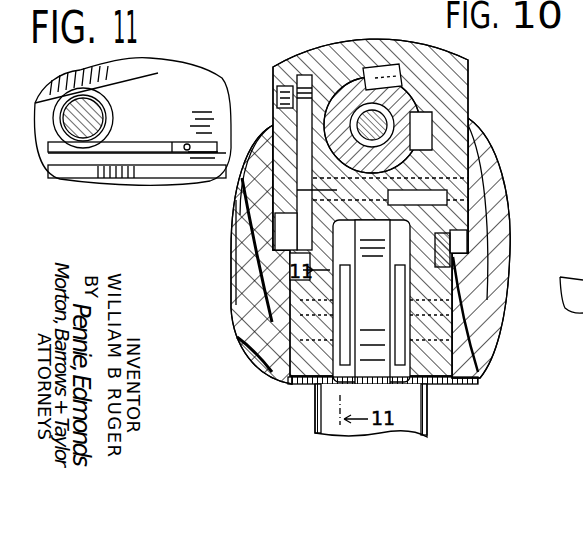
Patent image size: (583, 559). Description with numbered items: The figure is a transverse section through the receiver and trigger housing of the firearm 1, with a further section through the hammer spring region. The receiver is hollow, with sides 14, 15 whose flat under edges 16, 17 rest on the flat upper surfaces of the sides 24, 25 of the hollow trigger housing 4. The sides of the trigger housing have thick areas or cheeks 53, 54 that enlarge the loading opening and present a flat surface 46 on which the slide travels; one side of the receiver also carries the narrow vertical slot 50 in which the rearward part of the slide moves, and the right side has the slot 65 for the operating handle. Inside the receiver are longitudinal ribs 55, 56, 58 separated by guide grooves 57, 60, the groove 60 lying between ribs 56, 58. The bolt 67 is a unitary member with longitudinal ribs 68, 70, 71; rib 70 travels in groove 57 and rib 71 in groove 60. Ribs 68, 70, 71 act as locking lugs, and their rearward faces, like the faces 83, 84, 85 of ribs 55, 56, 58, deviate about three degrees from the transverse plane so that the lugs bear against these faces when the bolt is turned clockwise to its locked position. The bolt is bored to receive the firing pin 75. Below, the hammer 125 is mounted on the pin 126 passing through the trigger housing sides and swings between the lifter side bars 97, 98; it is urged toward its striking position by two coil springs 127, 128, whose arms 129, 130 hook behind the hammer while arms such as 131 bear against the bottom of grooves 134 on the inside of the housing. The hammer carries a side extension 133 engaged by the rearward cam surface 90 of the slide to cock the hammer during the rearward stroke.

In FIG. 10, the pistol 1 is at (500, 297).
In FIG. 10, the trigger housing 4 is at (443, 378).
In FIG. 10, the side of receiver 14 is at (280, 189).
In FIG. 10, the side of receiver 15 is at (458, 180).
In FIG. 10, the flat under edge 16 is at (279, 218).
In FIG. 10, the flat under edge 17 is at (470, 221).
In FIG. 11, the side of trigger housing 24 is at (188, 110).
In FIG. 10, the side of trigger housing 24 is at (318, 228).
In FIG. 10, the side of trigger housing 25 is at (440, 240).
In FIG. 10, the flat surface 46 is at (262, 292).
In FIG. 10, the narrow vertical slot 50 is at (293, 70).
In FIG. 10, the cheek 53 is at (258, 370).
In FIG. 10, the cheek 54 is at (472, 375).
In FIG. 10, the longitudinal rib 55 is at (392, 68).
In FIG. 10, the longitudinal rib 56 is at (467, 97).
In FIG. 10, the guide groove 57 is at (394, 67).
In FIG. 10, the longitudinal rib 58 is at (478, 137).
In FIG. 10, the guide groove 60 is at (463, 118).
In FIG. 10, the slot 65 is at (282, 90).
In FIG. 10, the bolt 67 is at (352, 165).
In FIG. 10, the longitudinal rib 68 is at (445, 222).
In FIG. 10, the longitudinal rib 70 is at (355, 70).
In FIG. 10, the longitudinal rib 71 is at (430, 80).
In FIG. 10, the firing pin 75 is at (366, 126).
In FIG. 10, the face of rib 83 is at (372, 68).
In FIG. 10, the face of rib 84 is at (466, 76).
In FIG. 10, the face of rib 85 is at (482, 160).
In FIG. 10, the rearward cam surface 90 is at (566, 300).
In FIG. 10, the side bar 97 is at (328, 273).
In FIG. 11, the side bar 98 is at (158, 72).
In FIG. 10, the side bar 98 is at (453, 258).
In FIG. 10, the hammer 125 is at (383, 290).
In FIG. 11, the pin 126 is at (97, 115).
In FIG. 11, the coil spring 127 is at (94, 91).
In FIG. 10, the coil spring 127 is at (306, 383).
In FIG. 10, the coil spring 128 is at (401, 386).
In FIG. 10, the spring arm 129 is at (370, 300).
In FIG. 10, the spring arm 130 is at (400, 292).
In FIG. 11, the spring arm 131 is at (113, 150).
In FIG. 10, the side extension 133 is at (290, 150).
In FIG. 11, the groove 134 is at (186, 148).